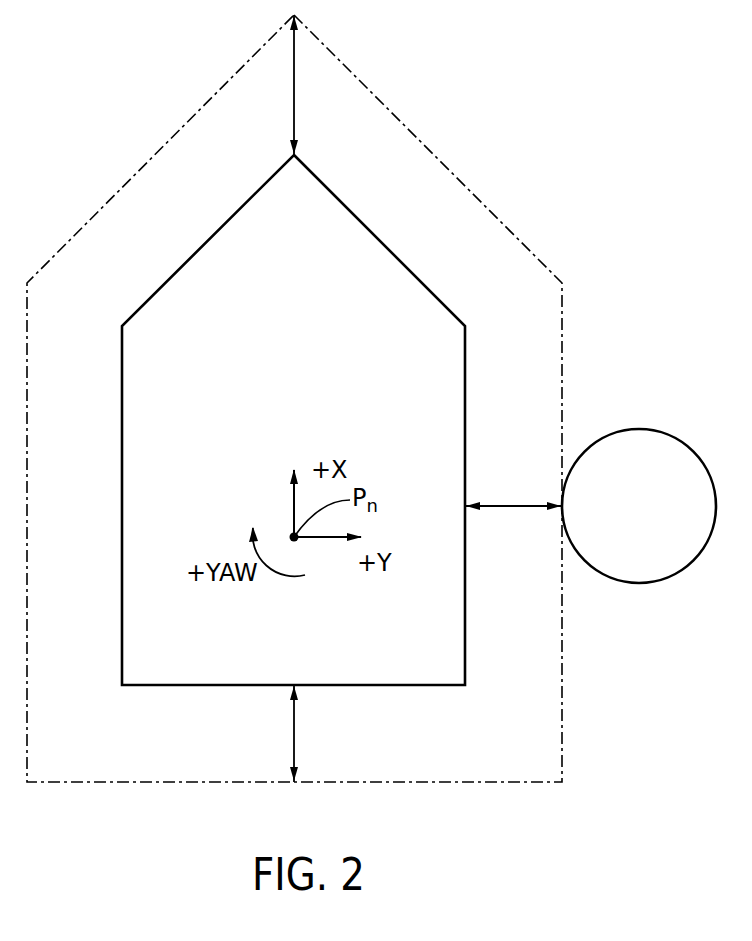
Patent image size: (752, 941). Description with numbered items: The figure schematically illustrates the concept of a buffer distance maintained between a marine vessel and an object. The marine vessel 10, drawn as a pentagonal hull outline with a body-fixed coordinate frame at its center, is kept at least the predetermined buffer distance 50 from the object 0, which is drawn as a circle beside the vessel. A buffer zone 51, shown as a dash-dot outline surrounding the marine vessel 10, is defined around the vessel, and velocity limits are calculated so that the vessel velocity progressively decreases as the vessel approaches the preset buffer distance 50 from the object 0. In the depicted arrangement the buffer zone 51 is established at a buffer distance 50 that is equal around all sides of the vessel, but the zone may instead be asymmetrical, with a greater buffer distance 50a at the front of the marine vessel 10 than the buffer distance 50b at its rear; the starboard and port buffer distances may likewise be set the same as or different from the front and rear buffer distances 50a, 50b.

The object 0 is at (637, 428).
The marine vessel 10 is at (380, 240).
The buffer distance 50 is at (530, 506).
The front buffer distance 50a is at (294, 86).
The rear buffer distance 50b is at (296, 750).
The buffer zone 51 is at (428, 150).